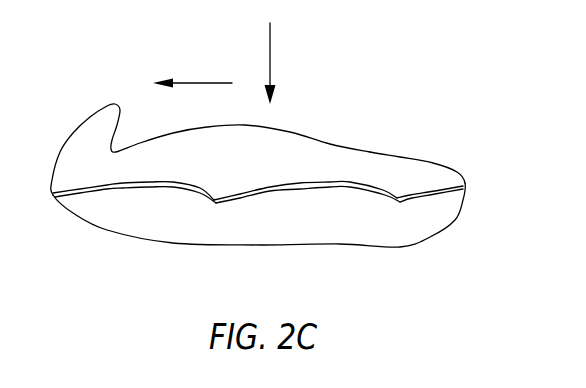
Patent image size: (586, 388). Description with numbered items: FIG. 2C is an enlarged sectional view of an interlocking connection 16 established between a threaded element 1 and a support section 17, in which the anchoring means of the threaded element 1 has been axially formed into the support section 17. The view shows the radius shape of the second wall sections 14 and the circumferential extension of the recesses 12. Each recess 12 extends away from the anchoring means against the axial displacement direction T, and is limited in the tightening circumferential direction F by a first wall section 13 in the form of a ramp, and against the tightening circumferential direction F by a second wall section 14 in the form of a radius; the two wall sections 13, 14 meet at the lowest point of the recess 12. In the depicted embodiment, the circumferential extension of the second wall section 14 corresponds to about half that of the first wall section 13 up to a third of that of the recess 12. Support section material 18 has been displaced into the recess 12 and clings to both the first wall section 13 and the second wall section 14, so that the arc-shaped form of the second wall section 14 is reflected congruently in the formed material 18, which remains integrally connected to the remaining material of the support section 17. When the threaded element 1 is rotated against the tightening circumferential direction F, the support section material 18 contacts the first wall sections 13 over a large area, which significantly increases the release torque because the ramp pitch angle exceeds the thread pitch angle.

The threaded element 1 is at (423, 183).
The axial recess 12 is at (307, 183).
The first wall section 13 is at (267, 187).
The second wall section 14 is at (372, 185).
The connection 16 is at (106, 264).
The support section 17 is at (175, 220).
The support section material 18 is at (280, 197).
The tightening circumferential direction F is at (207, 82).
The axial displacement direction T is at (271, 43).